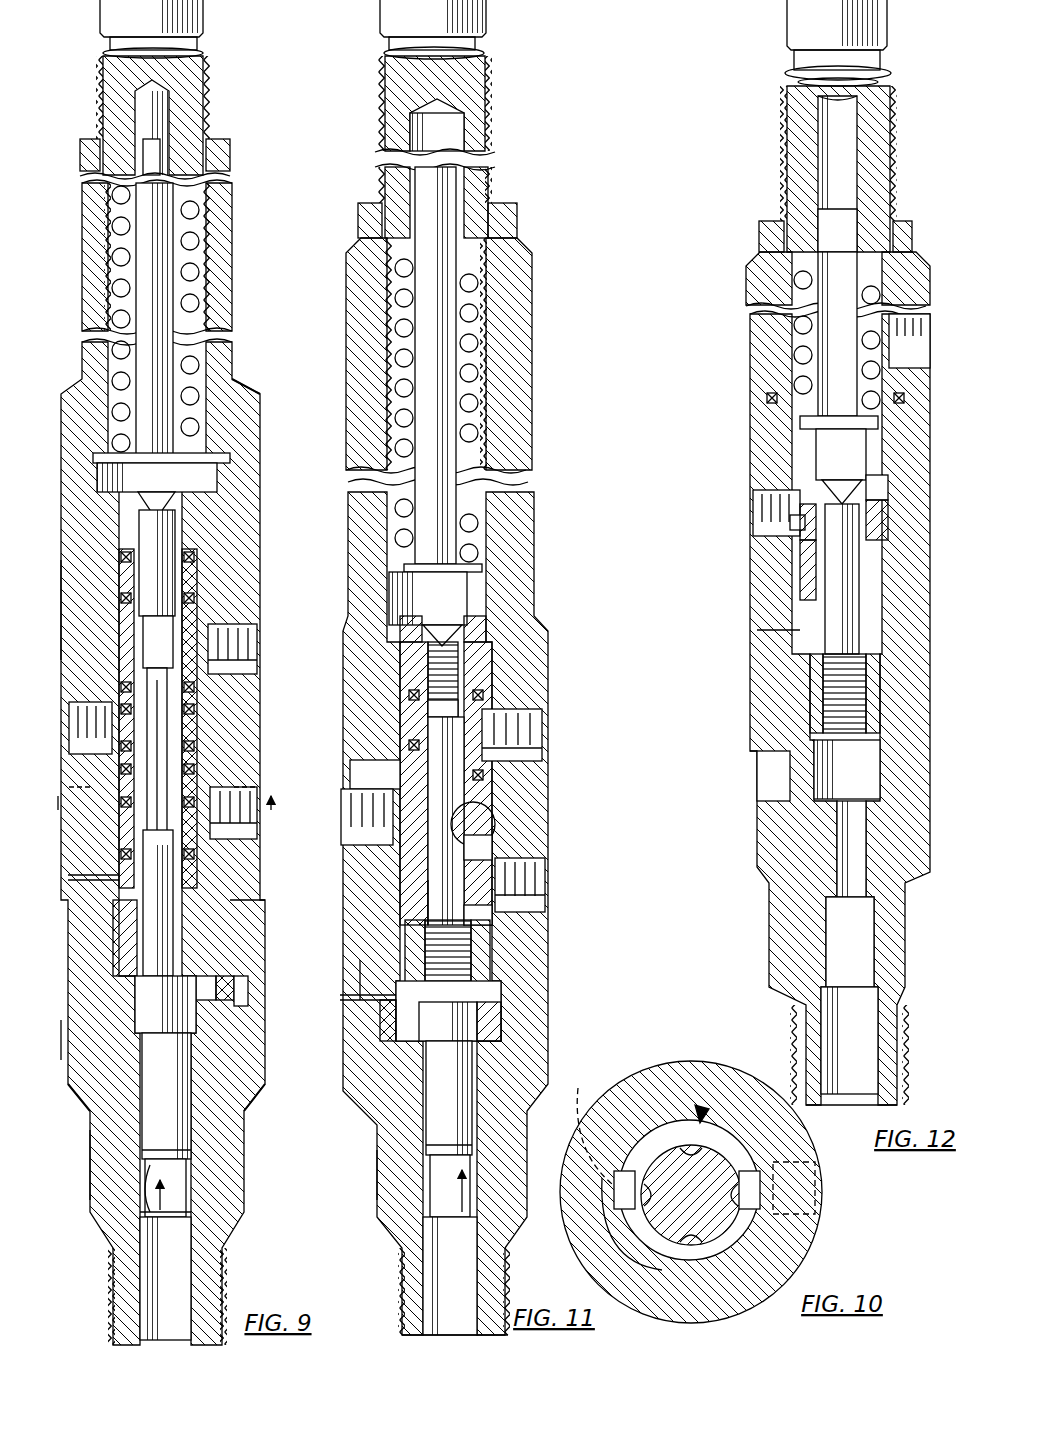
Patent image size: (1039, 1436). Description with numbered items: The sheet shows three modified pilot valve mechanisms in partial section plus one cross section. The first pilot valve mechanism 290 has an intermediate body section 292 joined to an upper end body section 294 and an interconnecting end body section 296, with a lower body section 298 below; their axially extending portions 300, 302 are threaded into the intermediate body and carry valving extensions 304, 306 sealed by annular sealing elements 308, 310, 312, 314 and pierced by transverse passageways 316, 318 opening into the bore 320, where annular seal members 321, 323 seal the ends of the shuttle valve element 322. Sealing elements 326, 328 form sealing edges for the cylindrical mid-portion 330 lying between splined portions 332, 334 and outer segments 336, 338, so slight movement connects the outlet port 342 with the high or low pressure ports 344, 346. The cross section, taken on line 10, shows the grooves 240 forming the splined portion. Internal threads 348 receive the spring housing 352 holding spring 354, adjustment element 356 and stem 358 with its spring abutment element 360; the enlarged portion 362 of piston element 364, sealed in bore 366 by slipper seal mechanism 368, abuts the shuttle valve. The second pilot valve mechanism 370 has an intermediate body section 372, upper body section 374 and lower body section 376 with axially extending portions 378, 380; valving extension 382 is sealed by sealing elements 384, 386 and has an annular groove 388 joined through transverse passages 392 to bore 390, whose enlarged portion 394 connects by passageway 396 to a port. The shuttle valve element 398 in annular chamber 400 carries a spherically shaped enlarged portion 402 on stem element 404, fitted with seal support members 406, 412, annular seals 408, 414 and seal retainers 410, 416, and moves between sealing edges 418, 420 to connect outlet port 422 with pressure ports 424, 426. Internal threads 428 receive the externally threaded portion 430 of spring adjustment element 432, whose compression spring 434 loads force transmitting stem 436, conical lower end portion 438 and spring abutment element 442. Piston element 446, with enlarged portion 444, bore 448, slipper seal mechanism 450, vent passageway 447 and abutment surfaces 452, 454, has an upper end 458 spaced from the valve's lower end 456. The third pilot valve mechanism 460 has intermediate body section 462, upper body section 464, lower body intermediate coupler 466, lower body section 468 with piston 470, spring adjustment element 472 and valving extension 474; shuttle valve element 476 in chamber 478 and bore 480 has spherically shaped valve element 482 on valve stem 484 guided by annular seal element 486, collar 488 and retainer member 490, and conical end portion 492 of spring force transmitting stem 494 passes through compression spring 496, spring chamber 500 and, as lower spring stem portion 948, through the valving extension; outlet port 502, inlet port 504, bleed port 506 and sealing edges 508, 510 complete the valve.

In FIG. 9, the section line 10 is at (171, 796).
In FIG. 9, the pilot valve mechanism 290 is at (63, 366).
In FIG. 9, the intermediate body section 292 is at (100, 625).
In FIG. 10, the intermediate body section 292 is at (691, 1192).
In FIG. 9, the upper end body section 294 is at (74, 433).
In FIG. 9, the interconnecting end body section 296 is at (92, 1112).
In FIG. 9, the lower body section 298 is at (118, 1170).
In FIG. 9, the axially extending portion 300 is at (240, 440).
In FIG. 9, the axially extending portion 302 is at (170, 1008).
In FIG. 9, the valving extension 304 is at (200, 560).
In FIG. 9, the valving extension 306 is at (195, 950).
In FIG. 9, the annular sealing element 308 is at (190, 603).
In FIG. 9, the annular sealing element 310 is at (180, 722).
In FIG. 9, the annular sealing element 312 is at (228, 810).
In FIG. 9, the annular sealing element 314 is at (225, 903).
In FIG. 9, the transverse passageway 316 is at (125, 660).
In FIG. 9, the transverse passageway 318 is at (125, 845).
In FIG. 10, the transverse passageway 318 is at (586, 1125).
In FIG. 9, the bore 320 is at (185, 926).
In FIG. 9, the annular seal member 321 is at (95, 580).
In FIG. 9, the shuttle valve element 322 is at (125, 760).
In FIG. 10, the shuttle valve element 322 is at (703, 1105).
In FIG. 9, the annular seal member 323 is at (113, 930).
In FIG. 9, the annular O-ring sealing element 326 is at (186, 746).
In FIG. 9, the annular O-ring sealing element 328 is at (186, 769).
In FIG. 9, the cylindrical mid-portion 330 is at (112, 740).
In FIG. 9, the splined portion 332 is at (190, 690).
In FIG. 9, the splined portion 334 is at (222, 835).
In FIG. 10, the splined portion 334 is at (700, 1155).
In FIG. 9, the outer segment 336 is at (215, 655).
In FIG. 9, the outer segment 338 is at (112, 880).
In FIG. 9, the outlet port 342 is at (80, 702).
In FIG. 9, the high pressure port 344 is at (222, 640).
In FIG. 9, the low pressure port 346 is at (184, 855).
In FIG. 9, the internal threads 348 is at (210, 531).
In FIG. 9, the spring housing 352 is at (217, 242).
In FIG. 9, the spring 354 is at (206, 216).
In FIG. 9, the adjustment element 356 is at (191, 24).
In FIG. 9, the stem 358 is at (150, 154).
In FIG. 9, the spring abutment element 360 is at (90, 520).
In FIG. 9, the enlarged portion 362 is at (210, 1063).
In FIG. 9, the piston element 364 is at (245, 1105).
In FIG. 9, the bore 366 is at (145, 1228).
In FIG. 9, the slipper seal mechanism 368 is at (200, 1210).
In FIG. 11, the pilot valve mechanism 370 is at (338, 383).
In FIG. 9, the intermediate body section 372 is at (95, 1036).
In FIG. 11, the intermediate body section 372 is at (505, 662).
In FIG. 11, the upper body section 374 is at (362, 258).
In FIG. 9, the lower body section 376 is at (205, 985).
In FIG. 11, the lower body section 376 is at (400, 1215).
In FIG. 11, the axially extending portion 378 is at (398, 625).
In FIG. 11, the axially extending portion 380 is at (380, 1169).
In FIG. 11, the valving extension 382 is at (400, 672).
In FIG. 11, the annular sealing element 384 is at (505, 560).
In FIG. 11, the sealing element 386 is at (462, 780).
In FIG. 11, the annular groove 388 is at (405, 742).
In FIG. 11, the bore 390 is at (470, 632).
In FIG. 11, the transverse passage 392 is at (462, 712).
In FIG. 11, the enlarged portion 394 is at (420, 888).
In FIG. 11, the passageway 396 is at (470, 920).
In FIG. 11, the shuttle valve element 398 is at (400, 862).
In FIG. 11, the annular chamber 400 is at (470, 840).
In FIG. 11, the spherically shaped enlarged portion 402 is at (458, 800).
In FIG. 11, the stem element 404 is at (470, 742).
In FIG. 11, the seal support member 406 is at (470, 945).
In FIG. 11, the annular seal member 408 is at (465, 965).
In FIG. 11, the seal retainer member 410 is at (470, 985).
In FIG. 11, the seal support member 412 is at (452, 690).
In FIG. 11, the annular seal 414 is at (447, 652).
In FIG. 11, the seal retainer 416 is at (470, 612).
In FIG. 11, the annular sealing edge 418 is at (503, 876).
In FIG. 11, the annular sealing edge 420 is at (455, 792).
In FIG. 11, the outlet port 422 is at (357, 770).
In FIG. 11, the high pressure port 424 is at (500, 748).
In FIG. 11, the low pressure port 426 is at (520, 905).
In FIG. 11, the internal threads 428 is at (471, 268).
In FIG. 11, the externally threaded portion 430 is at (490, 128).
In FIG. 11, the spring adjustment element 432 is at (447, 19).
In FIG. 11, the compression spring 434 is at (470, 255).
In FIG. 11, the force transmitting stem 436 is at (495, 265).
In FIG. 11, the conical lower end portion 438 is at (445, 520).
In FIG. 11, the spring abutment element 442 is at (485, 455).
In FIG. 11, the enlarged portion 444 is at (478, 1030).
In FIG. 11, the piston element 446 is at (445, 1090).
In FIG. 11, the vent passageway 447 is at (388, 992).
In FIG. 11, the bore 448 is at (462, 1160).
In FIG. 11, the slipper seal mechanism 450 is at (452, 1240).
In FIG. 11, the abutment surface 452 is at (485, 1010).
In FIG. 11, the abutment surface 454 is at (503, 1040).
In FIG. 11, the lower end 456 is at (398, 975).
In FIG. 11, the upper end 458 is at (398, 1040).
In FIG. 12, the pilot valve mechanism 460 is at (882, 175).
In FIG. 12, the intermediate body section 462 is at (770, 592).
In FIG. 12, the upper body section 464 is at (762, 285).
In FIG. 12, the lower body intermediate coupler 466 is at (765, 800).
In FIG. 12, the lower body section 468 is at (905, 975).
In FIG. 12, the piston 470 is at (838, 852).
In FIG. 12, the spring adjustment element 472 is at (850, 55).
In FIG. 12, the valving extension 474 is at (812, 468).
In FIG. 12, the shuttle valve element 476 is at (800, 505).
In FIG. 12, the chamber 478 is at (783, 522).
In FIG. 12, the bore 480 is at (835, 602).
In FIG. 12, the spherically shaped valve element 482 is at (876, 522).
In FIG. 12, the valve stem 484 is at (842, 632).
In FIG. 12, the annular seal element 486 is at (812, 702).
In FIG. 12, the collar 488 is at (822, 682).
In FIG. 12, the retainer member 490 is at (812, 732).
In FIG. 12, the conical end portion 492 is at (870, 480).
In FIG. 12, the spring force transmitting stem 494 is at (832, 360).
In FIG. 12, the compression spring 496 is at (803, 380).
In FIG. 12, the spring chamber 500 is at (792, 340).
In FIG. 12, the outlet port 502 is at (798, 528).
In FIG. 12, the inlet port 504 is at (772, 636).
In FIG. 12, the bleed port 506 is at (909, 341).
In FIG. 12, the sealing edge 508 is at (796, 570).
In FIG. 12, the sealing edge 510 is at (835, 492).
In FIG. 12, the lower spring stem portion 948 is at (832, 445).
In FIG. 10, the grooves 240 is at (640, 1200).